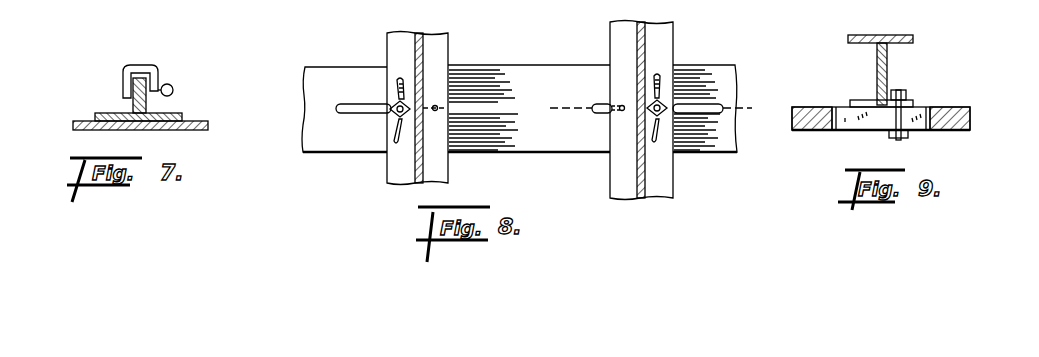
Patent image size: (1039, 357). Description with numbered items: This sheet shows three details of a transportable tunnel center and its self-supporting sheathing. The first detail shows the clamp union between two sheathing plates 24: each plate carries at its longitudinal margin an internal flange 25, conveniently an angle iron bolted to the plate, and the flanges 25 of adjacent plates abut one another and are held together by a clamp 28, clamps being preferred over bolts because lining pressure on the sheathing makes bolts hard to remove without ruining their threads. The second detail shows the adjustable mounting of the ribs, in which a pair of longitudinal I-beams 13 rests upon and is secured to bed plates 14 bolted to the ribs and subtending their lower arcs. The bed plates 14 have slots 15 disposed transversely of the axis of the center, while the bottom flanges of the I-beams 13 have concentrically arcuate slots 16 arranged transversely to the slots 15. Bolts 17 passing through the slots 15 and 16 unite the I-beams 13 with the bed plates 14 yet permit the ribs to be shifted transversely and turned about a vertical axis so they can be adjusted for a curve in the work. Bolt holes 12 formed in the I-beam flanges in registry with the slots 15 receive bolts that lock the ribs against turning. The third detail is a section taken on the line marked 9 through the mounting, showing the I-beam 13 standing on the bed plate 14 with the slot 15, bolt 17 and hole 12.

In FIG. 8, the spacing devices 9 is at (650, 109).
In FIG. 8, the bolt holes 12 is at (436, 112).
In FIG. 9, the bolt holes 12 is at (863, 101).
In FIG. 8, the I-beams 13 is at (447, 55).
In FIG. 9, the I-beams 13 is at (888, 77).
In FIG. 8, the bed plates 14 is at (555, 145).
In FIG. 9, the bed plates 14 is at (963, 127).
In FIG. 8, the slots 15 is at (358, 115).
In FIG. 9, the slots 15 is at (850, 125).
In FIG. 8, the arcuate slots 16 is at (402, 142).
In FIG. 8, the bolts 17 is at (395, 104).
In FIG. 9, the bolts 17 is at (899, 138).
In FIG. 7, the plates 24 is at (80, 122).
In FIG. 7, the flanges 25 is at (143, 112).
In FIG. 7, the clamps 28 is at (155, 74).